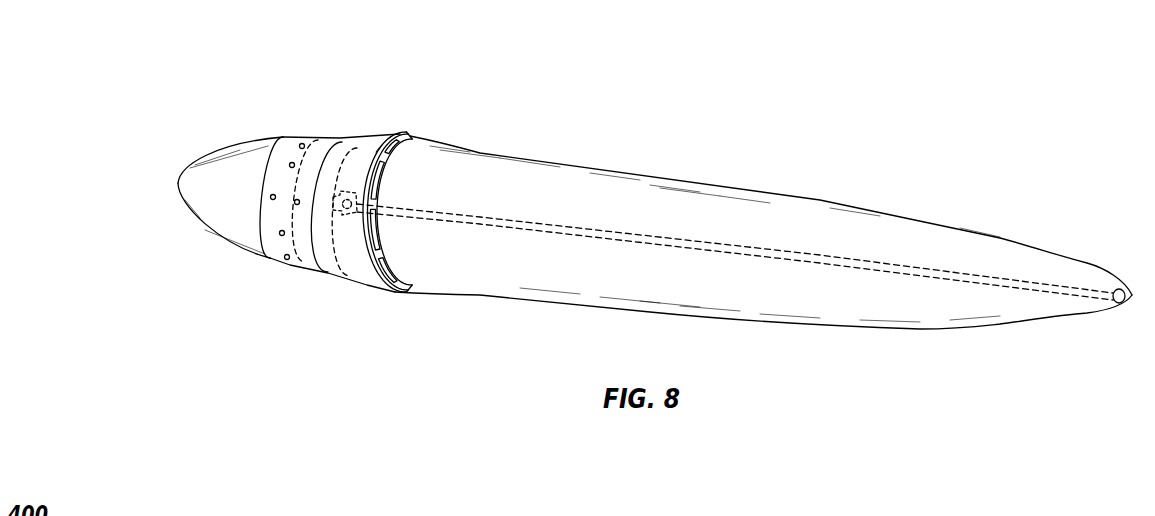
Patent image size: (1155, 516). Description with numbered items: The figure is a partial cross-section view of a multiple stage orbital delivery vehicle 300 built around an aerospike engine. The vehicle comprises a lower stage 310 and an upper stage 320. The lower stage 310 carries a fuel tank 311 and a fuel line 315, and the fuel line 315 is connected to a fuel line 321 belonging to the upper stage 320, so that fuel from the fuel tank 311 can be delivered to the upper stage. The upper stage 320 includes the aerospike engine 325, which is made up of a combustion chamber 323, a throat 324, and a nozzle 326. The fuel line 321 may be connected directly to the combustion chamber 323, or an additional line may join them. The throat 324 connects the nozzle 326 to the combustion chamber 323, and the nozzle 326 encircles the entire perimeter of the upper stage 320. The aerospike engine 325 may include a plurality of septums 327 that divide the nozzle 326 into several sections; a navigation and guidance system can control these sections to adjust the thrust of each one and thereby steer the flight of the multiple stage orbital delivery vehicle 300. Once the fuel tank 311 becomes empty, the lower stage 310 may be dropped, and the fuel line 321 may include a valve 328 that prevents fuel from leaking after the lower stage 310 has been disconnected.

The multiple stage orbital delivery vehicle 300 is at (978, 85).
The lower stage 310 is at (897, 199).
The fuel tank 311 is at (983, 253).
The fuel line 315 is at (928, 279).
The upper stage 320 is at (202, 141).
The fuel line 321 is at (341, 213).
The combustion chamber 323 is at (281, 238).
The throat 324 is at (308, 135).
The aerospike engine 325 is at (410, 132).
The nozzle 326 is at (392, 133).
The septums 327 is at (381, 168).
The valve 328 is at (347, 214).